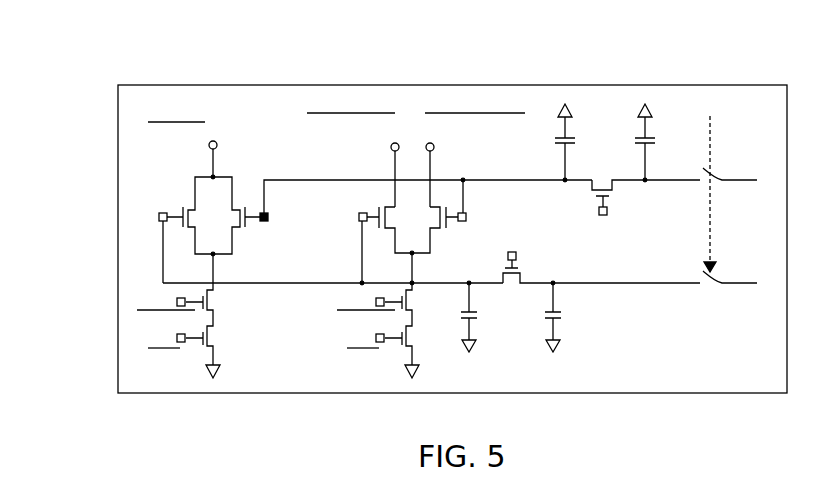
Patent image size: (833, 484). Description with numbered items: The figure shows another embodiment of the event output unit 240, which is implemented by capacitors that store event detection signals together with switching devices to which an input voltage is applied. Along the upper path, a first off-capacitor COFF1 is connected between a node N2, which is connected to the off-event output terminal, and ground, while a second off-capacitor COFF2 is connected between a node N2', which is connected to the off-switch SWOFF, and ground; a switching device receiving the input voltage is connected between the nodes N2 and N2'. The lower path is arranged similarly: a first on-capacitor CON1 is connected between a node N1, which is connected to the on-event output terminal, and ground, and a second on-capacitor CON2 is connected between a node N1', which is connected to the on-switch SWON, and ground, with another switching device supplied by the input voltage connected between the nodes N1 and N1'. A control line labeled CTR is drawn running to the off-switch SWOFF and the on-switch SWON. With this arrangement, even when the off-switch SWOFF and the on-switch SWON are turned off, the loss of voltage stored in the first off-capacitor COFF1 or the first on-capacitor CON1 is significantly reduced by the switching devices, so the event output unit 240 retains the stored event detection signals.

The event output unit 240 is at (758, 84).
The node N1 is at (464, 264).
The node N1' is at (557, 264).
The node N2 is at (553, 201).
The node N2' is at (647, 201).
The first on-capacitor CON1 is at (490, 317).
The second on-capacitor CON2 is at (574, 317).
The first off-capacitor COFF1 is at (549, 142).
The second off-capacitor COFF2 is at (629, 142).
The on-switch SWON is at (608, 273).
The off-switch SWOFF is at (651, 207).
The control signal CTR is at (712, 184).